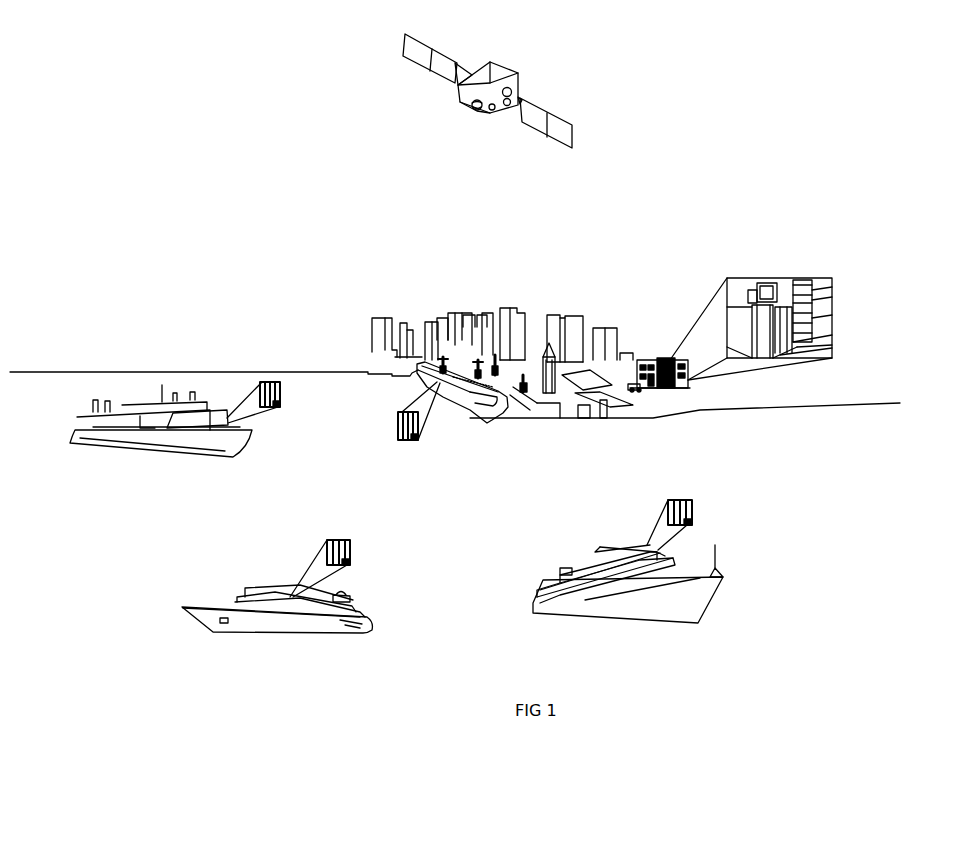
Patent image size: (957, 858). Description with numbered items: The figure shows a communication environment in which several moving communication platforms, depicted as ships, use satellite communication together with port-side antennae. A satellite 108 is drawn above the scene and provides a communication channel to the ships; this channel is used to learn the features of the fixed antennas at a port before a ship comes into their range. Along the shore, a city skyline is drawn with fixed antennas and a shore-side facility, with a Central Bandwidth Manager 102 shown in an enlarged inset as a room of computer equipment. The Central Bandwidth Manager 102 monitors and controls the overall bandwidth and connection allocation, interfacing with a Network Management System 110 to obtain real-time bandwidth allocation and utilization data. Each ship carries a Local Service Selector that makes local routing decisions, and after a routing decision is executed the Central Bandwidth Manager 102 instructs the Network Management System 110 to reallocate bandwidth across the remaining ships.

The Central Bandwidth Manager 102 is at (827, 307).
The satellite 108 is at (478, 115).
The Network Management System 110 is at (733, 323).